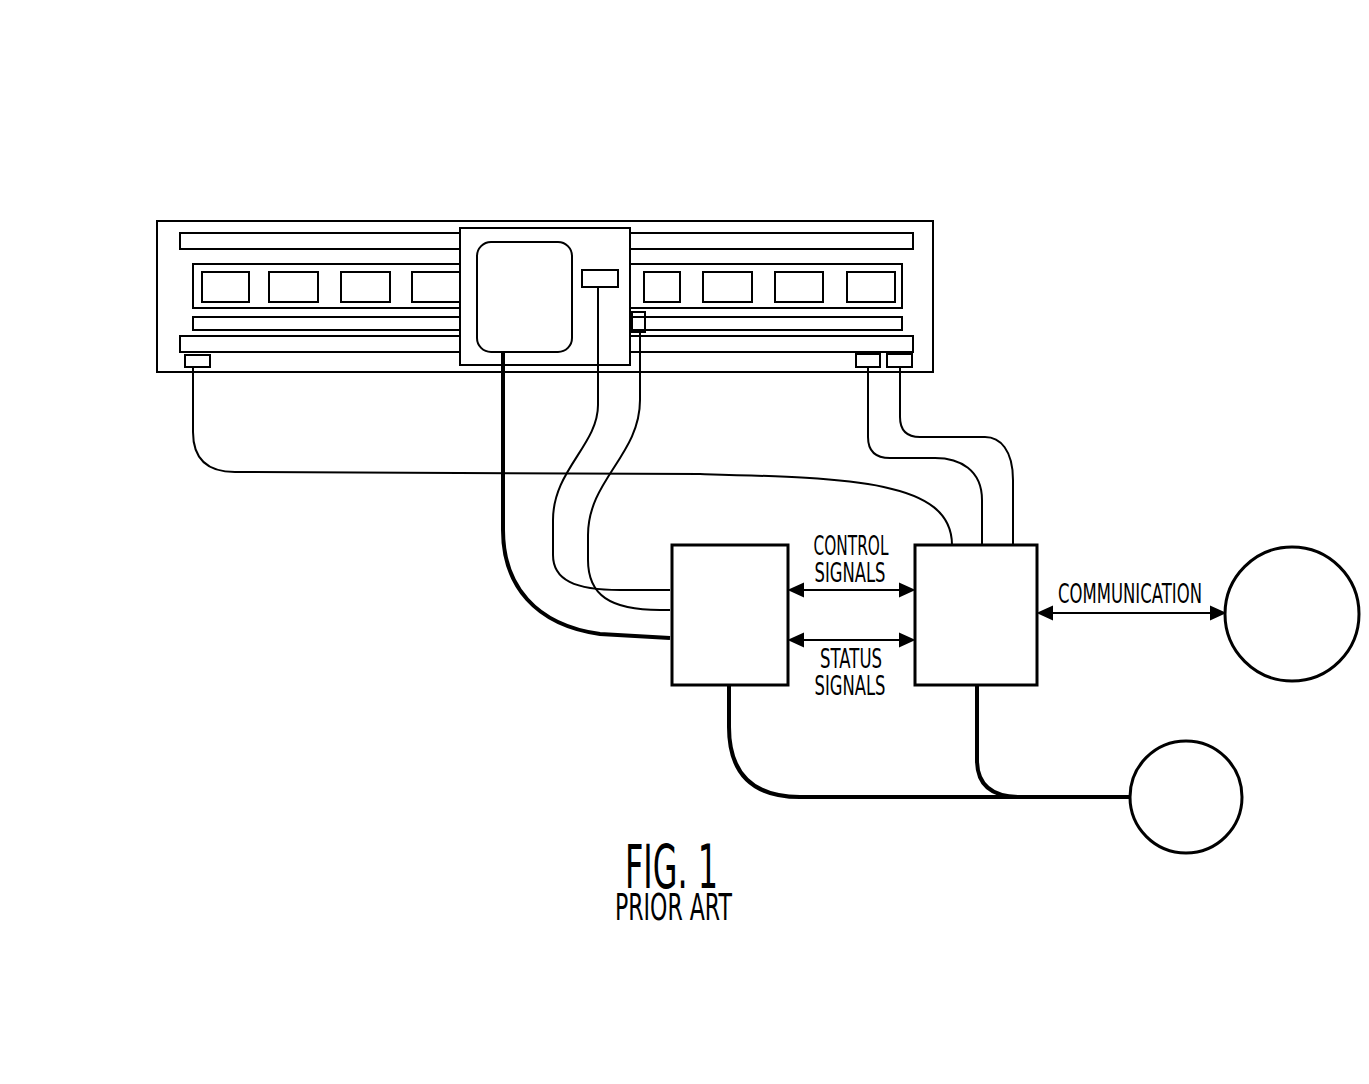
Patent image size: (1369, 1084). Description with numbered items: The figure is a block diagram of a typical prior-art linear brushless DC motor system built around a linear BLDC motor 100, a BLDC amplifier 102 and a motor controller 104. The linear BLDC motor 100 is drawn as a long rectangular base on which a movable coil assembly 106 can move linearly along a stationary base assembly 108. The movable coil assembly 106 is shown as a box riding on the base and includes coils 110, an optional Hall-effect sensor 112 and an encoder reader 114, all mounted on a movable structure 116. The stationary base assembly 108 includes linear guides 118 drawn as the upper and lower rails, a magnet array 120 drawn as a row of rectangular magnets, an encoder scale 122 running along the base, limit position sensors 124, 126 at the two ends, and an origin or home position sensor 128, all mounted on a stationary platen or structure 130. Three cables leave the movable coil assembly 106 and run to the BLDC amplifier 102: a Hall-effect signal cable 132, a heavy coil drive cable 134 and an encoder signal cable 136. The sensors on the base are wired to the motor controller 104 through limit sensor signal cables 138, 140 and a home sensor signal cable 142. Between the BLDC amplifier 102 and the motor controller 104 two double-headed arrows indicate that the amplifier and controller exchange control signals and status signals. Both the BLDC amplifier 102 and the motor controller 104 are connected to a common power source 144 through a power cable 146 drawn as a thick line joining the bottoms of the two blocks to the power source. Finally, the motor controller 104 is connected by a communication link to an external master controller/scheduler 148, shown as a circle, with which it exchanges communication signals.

The linear BLDC motor 100 is at (970, 183).
The BLDC amplifier 102 is at (668, 668).
The motor controller 104 is at (1037, 545).
The movable coil assembly 106 is at (532, 237).
The stationary base assembly 108 is at (933, 237).
The coils 110 is at (500, 255).
The Hall-effect sensor 112 is at (598, 275).
The encoder reader 114 is at (640, 320).
The movable structure 116 is at (617, 237).
The linear guides 118 is at (302, 243).
The magnet array 120 is at (773, 263).
The encoder scale 122 is at (902, 325).
The limit position sensor 124 is at (187, 360).
The limit position sensor 126 is at (912, 363).
The home position sensor 128 is at (857, 367).
The stationary platen 130 is at (920, 275).
The Hall-effect signal cable 132 is at (520, 555).
The coil drive cable 134 is at (523, 608).
The encoder signal cable 136 is at (590, 525).
The limit sensor signal cable 138 is at (282, 472).
The limit sensor signal cable 140 is at (993, 438).
The home sensor signal cable 142 is at (867, 422).
The power source 144 is at (1233, 762).
The power cable 146 is at (1025, 795).
The master controller/scheduler 148 is at (1288, 547).